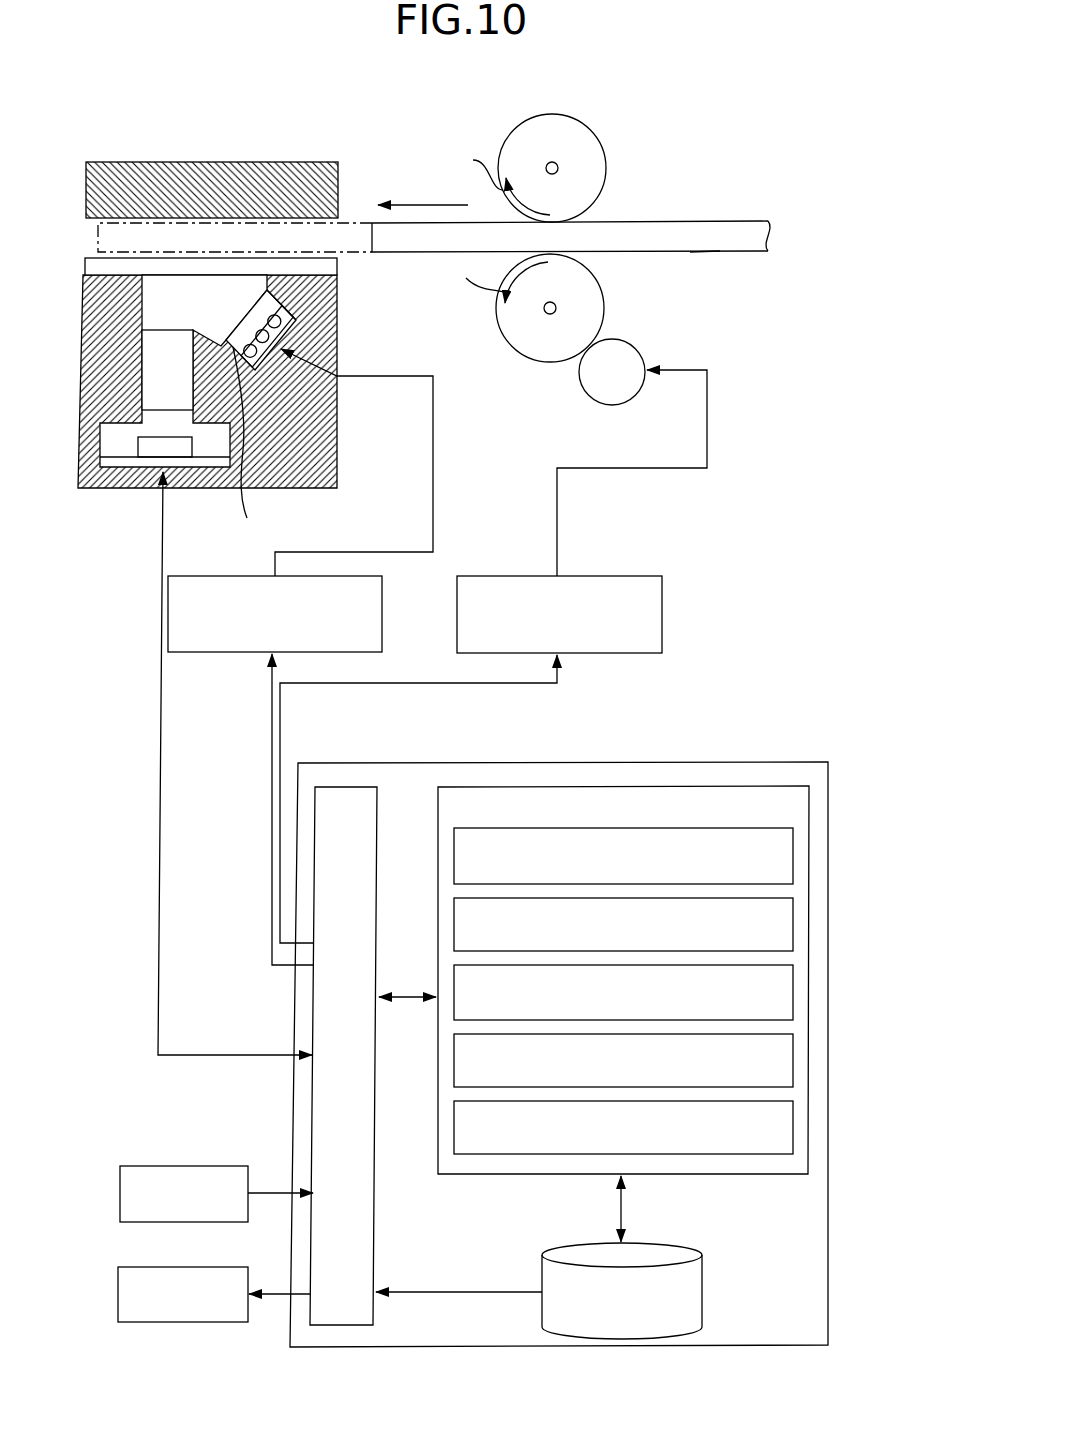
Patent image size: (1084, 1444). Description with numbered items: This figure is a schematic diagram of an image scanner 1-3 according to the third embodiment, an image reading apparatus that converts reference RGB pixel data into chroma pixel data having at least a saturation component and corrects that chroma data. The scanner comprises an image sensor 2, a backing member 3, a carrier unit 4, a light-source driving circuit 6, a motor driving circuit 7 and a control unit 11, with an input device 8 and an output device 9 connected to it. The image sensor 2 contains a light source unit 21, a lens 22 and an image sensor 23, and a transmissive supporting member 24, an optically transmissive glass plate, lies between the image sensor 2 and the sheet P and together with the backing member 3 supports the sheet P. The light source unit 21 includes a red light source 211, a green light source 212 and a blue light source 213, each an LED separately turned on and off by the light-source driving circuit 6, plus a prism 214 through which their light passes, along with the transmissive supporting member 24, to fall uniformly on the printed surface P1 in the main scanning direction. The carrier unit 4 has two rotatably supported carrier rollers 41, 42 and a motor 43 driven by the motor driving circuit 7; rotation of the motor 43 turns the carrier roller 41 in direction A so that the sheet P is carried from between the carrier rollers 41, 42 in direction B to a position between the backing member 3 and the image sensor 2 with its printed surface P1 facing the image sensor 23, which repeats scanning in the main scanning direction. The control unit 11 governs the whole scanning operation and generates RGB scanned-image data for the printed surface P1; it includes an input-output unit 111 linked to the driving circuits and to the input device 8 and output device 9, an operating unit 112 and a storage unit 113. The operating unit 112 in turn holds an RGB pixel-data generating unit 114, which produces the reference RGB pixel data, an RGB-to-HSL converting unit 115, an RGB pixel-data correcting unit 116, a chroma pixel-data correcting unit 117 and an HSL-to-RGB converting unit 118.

The image scanner 1-3 is at (120, 101).
The image sensor 2 is at (215, 396).
The backing member 3 is at (174, 162).
The carrier unit 4 is at (555, 225).
The light-source driving circuit 6 is at (186, 576).
The motor driving circuit 7 is at (608, 576).
The input device 8 is at (208, 1166).
The output device 9 is at (208, 1267).
The control unit 11 is at (772, 736).
The light source unit 21 is at (314, 381).
The lens 22 is at (163, 367).
The image sensor 23 is at (88, 456).
The transmissive supporting member 24 is at (87, 268).
The carrier roller 41 is at (517, 346).
The carrier roller 42 is at (522, 147).
The motor 43 is at (625, 343).
The input-output (I/O) unit 111 is at (358, 787).
The operating unit 112 is at (809, 808).
The storage unit 113 is at (702, 1293).
The RGB pixel-data generating unit 114 is at (793, 855).
The RGB-to-HSL converting unit 115 is at (793, 923).
The RGB pixel-data correcting unit 116 is at (793, 992).
The chroma pixel-data correcting unit 117 is at (793, 1061).
The HSL-to-RGB converting unit 118 is at (793, 1130).
The red (R) light source 211 is at (258, 357).
The green (G) light source 212 is at (293, 318).
The blue (B) light source 213 is at (290, 290).
The prism 214 is at (247, 444).
The sheet P is at (688, 198).
The printed surface P1 is at (703, 253).